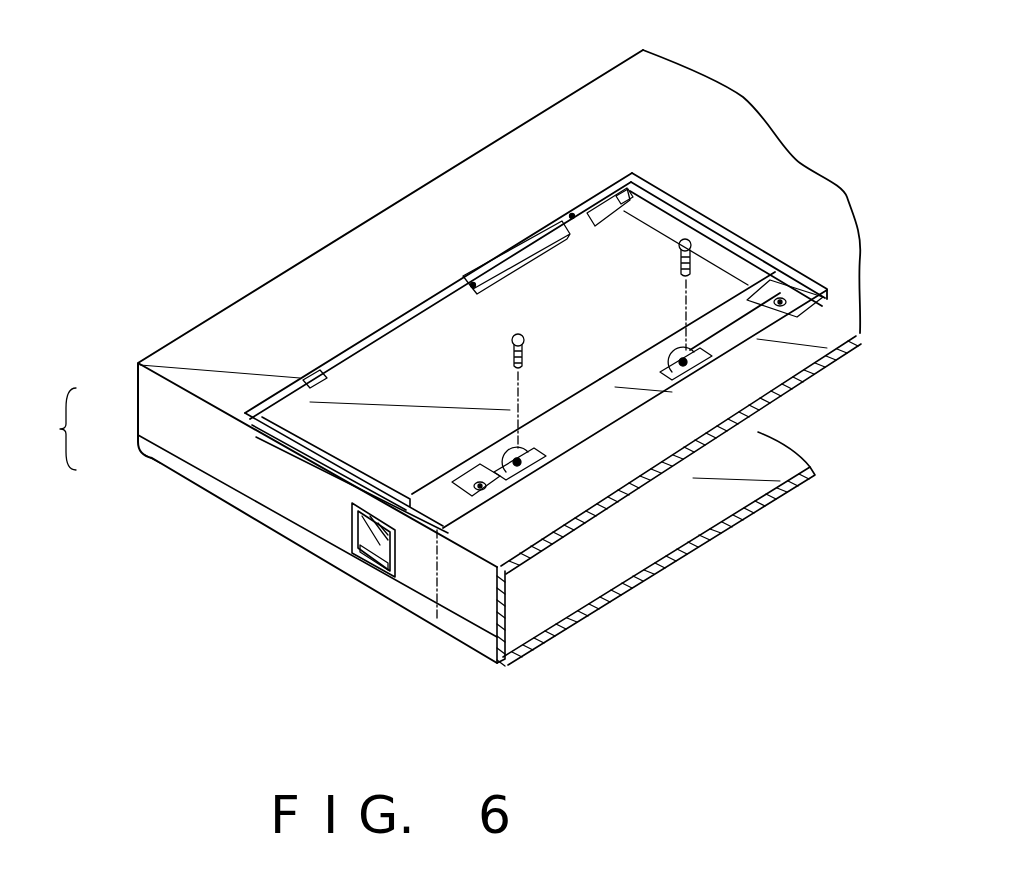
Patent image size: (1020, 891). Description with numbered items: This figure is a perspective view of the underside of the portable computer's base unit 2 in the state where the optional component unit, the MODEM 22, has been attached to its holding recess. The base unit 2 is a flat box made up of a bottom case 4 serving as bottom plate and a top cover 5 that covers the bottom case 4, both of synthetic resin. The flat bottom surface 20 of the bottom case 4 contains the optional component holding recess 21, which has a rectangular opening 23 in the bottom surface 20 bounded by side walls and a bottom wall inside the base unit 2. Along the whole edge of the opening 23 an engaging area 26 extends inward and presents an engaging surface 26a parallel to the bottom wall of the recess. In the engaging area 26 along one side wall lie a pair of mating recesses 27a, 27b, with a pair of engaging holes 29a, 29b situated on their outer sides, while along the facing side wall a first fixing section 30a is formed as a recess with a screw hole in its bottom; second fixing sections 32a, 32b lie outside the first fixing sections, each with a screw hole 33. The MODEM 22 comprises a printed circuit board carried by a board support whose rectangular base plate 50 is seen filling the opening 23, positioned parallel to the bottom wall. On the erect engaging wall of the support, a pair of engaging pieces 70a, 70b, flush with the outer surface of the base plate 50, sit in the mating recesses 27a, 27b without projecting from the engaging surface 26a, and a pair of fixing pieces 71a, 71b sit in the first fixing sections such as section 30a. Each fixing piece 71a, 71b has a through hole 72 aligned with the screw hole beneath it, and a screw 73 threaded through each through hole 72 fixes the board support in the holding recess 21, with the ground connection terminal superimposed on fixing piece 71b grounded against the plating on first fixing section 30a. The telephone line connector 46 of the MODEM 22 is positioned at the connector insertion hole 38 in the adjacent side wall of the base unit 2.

The base unit 2 is at (58, 429).
The bottom case 4 is at (148, 412).
The top cover 5 is at (146, 448).
The bottom surface 20 is at (325, 276).
The optional component holding recess 21 is at (740, 230).
The MODEM 22 is at (655, 222).
The rectangular opening 23 is at (703, 215).
The engaging area 26 is at (422, 302).
The engaging surface 26a is at (602, 424).
The mating recess 27a is at (586, 213).
The mating recess 27b is at (473, 287).
The engaging hole 29a is at (616, 203).
The engaging hole 29b is at (300, 377).
The first fixing section 30a is at (781, 393).
The second fixing section 32a is at (814, 357).
The second fixing section 32b is at (497, 500).
The screw hole 33 is at (790, 296).
The connector insertion hole 38 is at (365, 563).
The connector 46 is at (387, 557).
The base plate 50 is at (352, 437).
The engaging piece 70a is at (570, 217).
The engaging piece 70b is at (470, 283).
The fixing piece 71a is at (665, 374).
The fixing piece 71b is at (537, 468).
The through hole 72 is at (519, 455).
The screw 73 is at (679, 245).